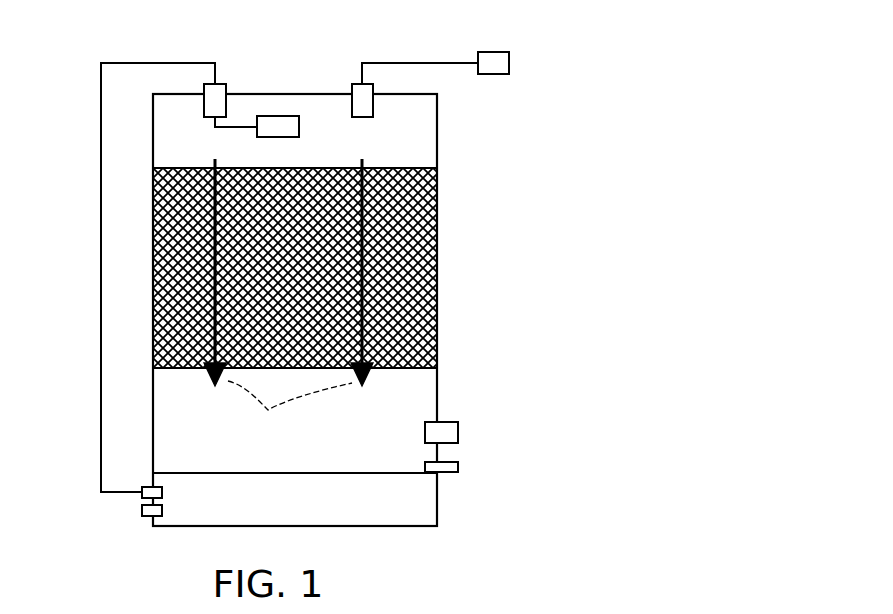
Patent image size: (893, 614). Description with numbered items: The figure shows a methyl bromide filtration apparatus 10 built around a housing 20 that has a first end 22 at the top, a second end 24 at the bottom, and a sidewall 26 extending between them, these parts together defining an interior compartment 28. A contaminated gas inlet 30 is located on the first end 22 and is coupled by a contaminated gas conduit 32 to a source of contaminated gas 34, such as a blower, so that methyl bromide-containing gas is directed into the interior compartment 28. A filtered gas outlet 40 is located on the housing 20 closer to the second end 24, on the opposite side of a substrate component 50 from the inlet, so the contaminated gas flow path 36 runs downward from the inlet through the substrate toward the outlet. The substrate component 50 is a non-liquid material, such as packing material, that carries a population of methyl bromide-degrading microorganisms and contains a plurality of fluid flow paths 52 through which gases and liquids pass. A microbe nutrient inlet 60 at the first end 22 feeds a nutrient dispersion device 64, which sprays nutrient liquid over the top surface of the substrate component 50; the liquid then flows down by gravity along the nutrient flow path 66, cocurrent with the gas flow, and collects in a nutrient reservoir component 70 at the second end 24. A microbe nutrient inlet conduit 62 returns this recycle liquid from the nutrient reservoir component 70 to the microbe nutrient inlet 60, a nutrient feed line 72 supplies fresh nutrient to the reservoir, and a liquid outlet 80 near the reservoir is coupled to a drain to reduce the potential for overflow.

The filtration apparatus 10 is at (324, 289).
The housing 20 is at (437, 385).
The first end 22 is at (437, 110).
The second end 24 is at (437, 495).
The sidewall 26 is at (437, 295).
The interior compartment 28 is at (383, 410).
The contaminated gas inlet 30 is at (357, 97).
The contaminated gas conduit 32 is at (417, 63).
The source of contaminated gas 34 is at (493, 52).
The contaminated gas flow path 36 is at (355, 383).
The filtered gas outlet 40 is at (458, 430).
The substrate component 50 is at (400, 233).
The fluid flow paths 52 is at (424, 203).
The microbe nutrient inlet 60 is at (223, 84).
The microbe nutrient inlet conduit 62 is at (101, 227).
The nutrient dispersion device 64 is at (281, 116).
The nutrient flow path 66 is at (227, 381).
The nutrient reservoir component 70 is at (393, 507).
The nutrient feed line 72 is at (142, 512).
The liquid outlet 80 is at (458, 467).